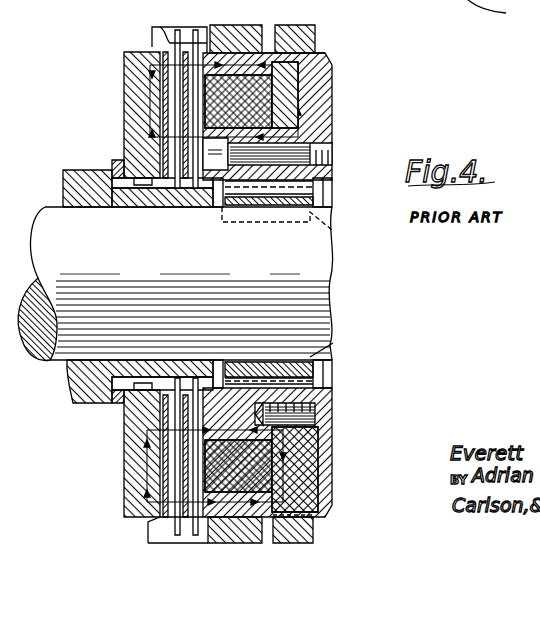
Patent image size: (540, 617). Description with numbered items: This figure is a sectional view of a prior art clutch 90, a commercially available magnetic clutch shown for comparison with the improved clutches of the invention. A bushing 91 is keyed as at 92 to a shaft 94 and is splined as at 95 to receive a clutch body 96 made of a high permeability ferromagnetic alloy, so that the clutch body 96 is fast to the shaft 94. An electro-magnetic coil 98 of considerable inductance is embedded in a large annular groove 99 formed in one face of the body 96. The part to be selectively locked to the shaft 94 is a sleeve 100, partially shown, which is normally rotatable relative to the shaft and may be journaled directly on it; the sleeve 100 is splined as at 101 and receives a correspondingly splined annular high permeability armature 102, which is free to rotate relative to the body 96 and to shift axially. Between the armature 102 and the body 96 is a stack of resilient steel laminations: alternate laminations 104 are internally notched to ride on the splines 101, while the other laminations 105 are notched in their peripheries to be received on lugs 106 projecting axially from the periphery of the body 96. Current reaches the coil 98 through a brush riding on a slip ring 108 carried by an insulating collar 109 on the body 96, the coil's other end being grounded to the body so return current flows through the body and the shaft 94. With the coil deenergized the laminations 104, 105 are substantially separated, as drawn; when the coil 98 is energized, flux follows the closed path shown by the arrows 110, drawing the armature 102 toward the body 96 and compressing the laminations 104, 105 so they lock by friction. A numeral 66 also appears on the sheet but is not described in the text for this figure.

The spring 66 is at (499, 12).
The prior art clutch 90 is at (107, 435).
The bushing 91 is at (333, 346).
The key 92 is at (332, 230).
The shaft 94 is at (313, 275).
The splines 95 is at (317, 377).
The clutch body 96 is at (305, 447).
The electro-magnetic coil 98 is at (238, 283).
The annular groove 99 is at (272, 100).
The sleeve 100 is at (78, 172).
The splines 101 is at (123, 190).
The armature 102 is at (137, 90).
The laminations 104 is at (172, 203).
The laminations 105 is at (194, 29).
The lugs 106 is at (152, 30).
The slip ring 108 is at (317, 34).
The insulating collar 109 is at (318, 53).
The arrows 110 is at (307, 128).